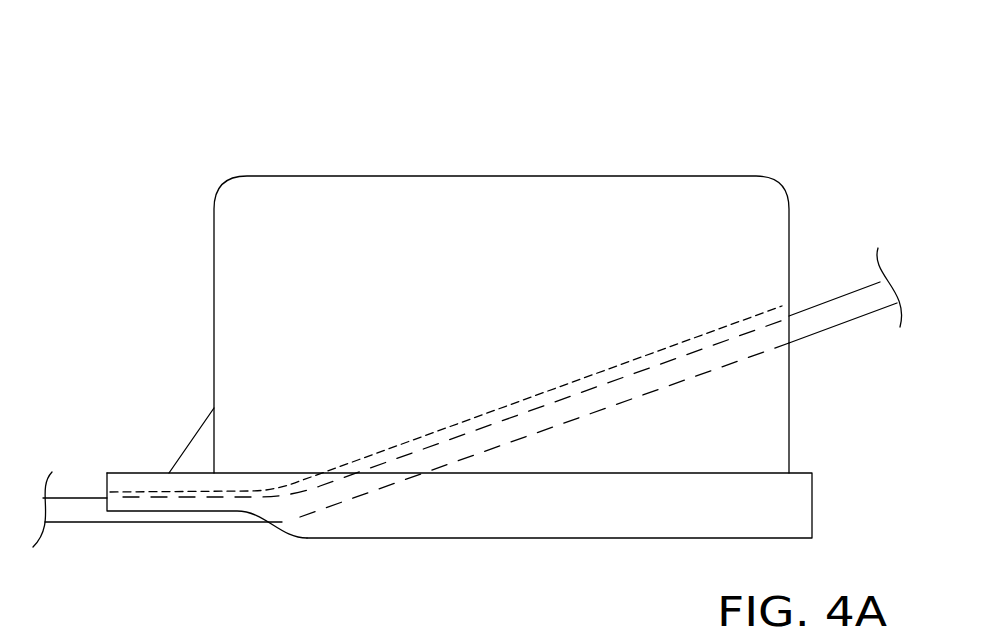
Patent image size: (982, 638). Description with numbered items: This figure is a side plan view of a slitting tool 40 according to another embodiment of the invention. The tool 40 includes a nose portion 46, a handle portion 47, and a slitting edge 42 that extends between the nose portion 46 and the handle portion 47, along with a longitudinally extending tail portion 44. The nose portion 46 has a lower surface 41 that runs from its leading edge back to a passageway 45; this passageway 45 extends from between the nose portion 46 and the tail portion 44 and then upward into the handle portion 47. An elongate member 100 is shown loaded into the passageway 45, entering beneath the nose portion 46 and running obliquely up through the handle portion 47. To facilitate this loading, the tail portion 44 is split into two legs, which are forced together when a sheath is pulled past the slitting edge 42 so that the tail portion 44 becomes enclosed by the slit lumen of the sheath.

The slitting tool 40 is at (441, 96).
The lower surface 41 is at (172, 498).
The slitting edge 42 is at (190, 440).
The tail portion 44 is at (588, 512).
The passageway 45 is at (598, 377).
The nose portion 46 is at (153, 487).
The handle portion 47 is at (525, 230).
The elongate member 100 is at (78, 508).